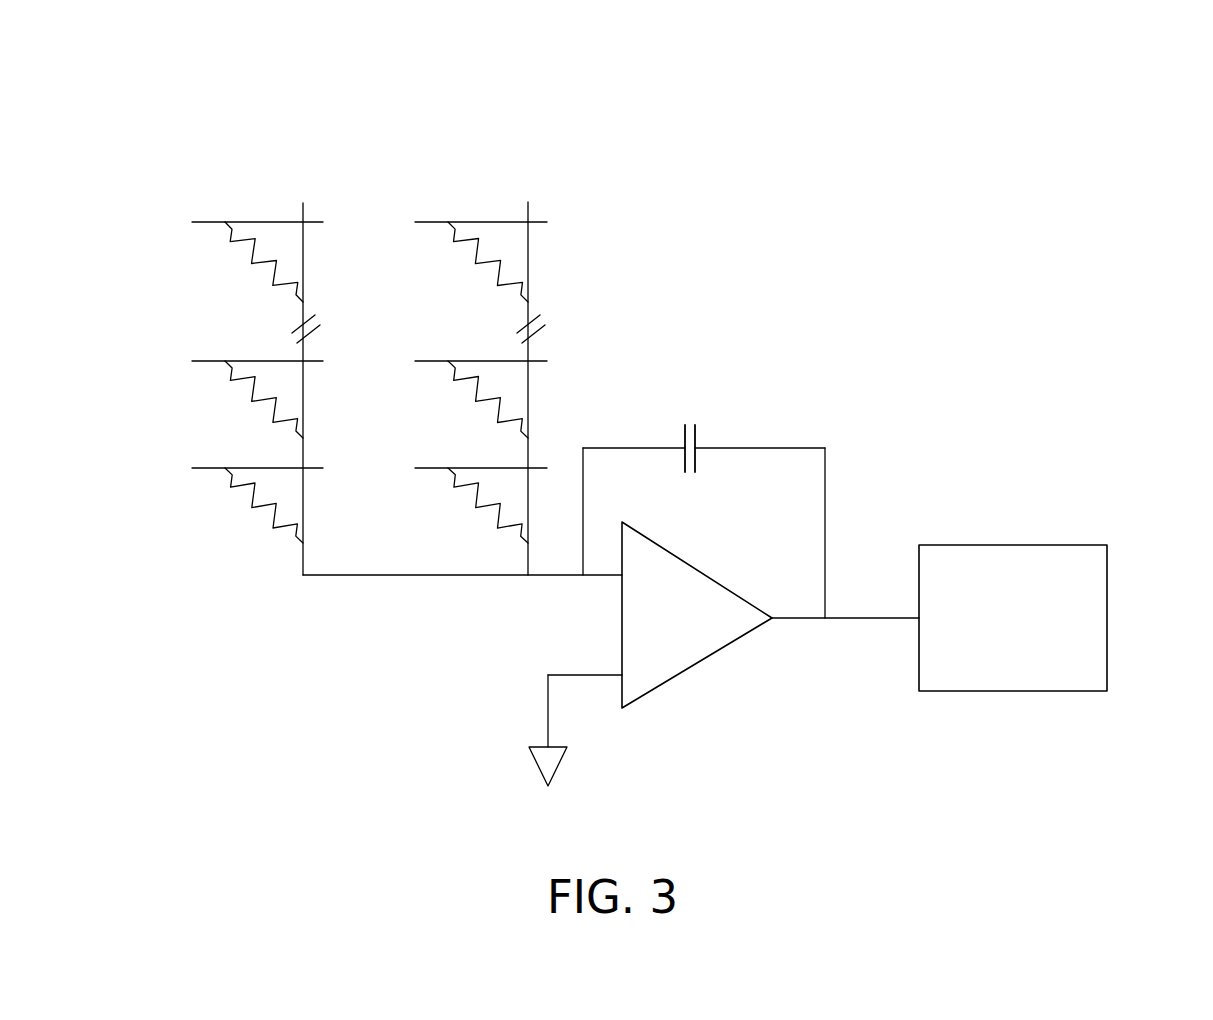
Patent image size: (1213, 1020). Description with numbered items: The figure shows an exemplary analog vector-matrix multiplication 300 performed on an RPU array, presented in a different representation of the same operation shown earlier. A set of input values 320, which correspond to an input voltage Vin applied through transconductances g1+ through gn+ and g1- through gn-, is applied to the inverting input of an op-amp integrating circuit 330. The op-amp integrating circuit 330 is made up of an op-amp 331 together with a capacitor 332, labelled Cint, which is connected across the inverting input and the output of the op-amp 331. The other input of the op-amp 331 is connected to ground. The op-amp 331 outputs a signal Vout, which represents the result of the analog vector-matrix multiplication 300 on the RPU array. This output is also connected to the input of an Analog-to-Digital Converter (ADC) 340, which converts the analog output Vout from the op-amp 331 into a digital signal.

The analog vector-matrix multiplication 300 is at (1093, 72).
The set of input values 320 is at (505, 181).
The op-amp integrating circuit 330 is at (765, 332).
The op-amp 331 is at (697, 615).
The capacitor 332 is at (704, 514).
The Analog-to-Digital Converter (ADC) 340 is at (1013, 618).